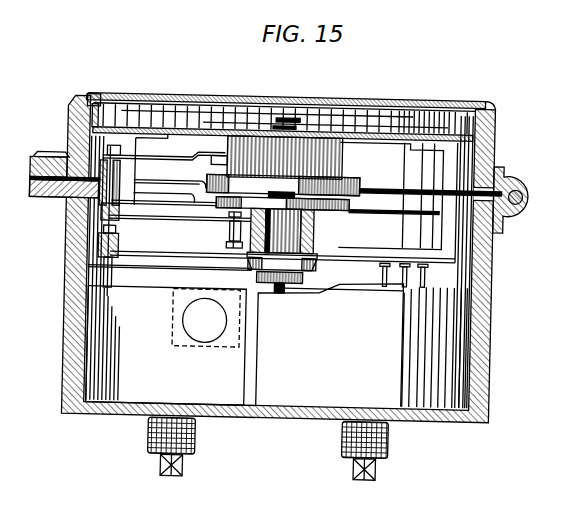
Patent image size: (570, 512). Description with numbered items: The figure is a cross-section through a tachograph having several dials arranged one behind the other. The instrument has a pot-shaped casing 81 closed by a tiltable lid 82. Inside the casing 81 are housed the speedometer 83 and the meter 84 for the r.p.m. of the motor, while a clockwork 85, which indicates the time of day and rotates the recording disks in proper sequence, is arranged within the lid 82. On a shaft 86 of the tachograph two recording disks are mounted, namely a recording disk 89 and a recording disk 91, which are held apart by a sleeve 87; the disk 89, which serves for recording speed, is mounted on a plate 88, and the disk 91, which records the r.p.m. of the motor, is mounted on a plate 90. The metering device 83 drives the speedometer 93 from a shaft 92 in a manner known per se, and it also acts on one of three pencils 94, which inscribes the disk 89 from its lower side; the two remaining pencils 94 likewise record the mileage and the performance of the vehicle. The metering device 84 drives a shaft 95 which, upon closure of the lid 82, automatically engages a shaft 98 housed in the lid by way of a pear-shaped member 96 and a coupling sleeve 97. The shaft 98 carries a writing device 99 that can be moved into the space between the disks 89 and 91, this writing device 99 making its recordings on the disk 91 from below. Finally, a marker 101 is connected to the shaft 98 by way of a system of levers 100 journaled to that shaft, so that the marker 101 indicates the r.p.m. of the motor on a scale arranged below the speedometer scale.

The casing 81 is at (487, 289).
The lid 82 is at (488, 155).
The speedometer 83 is at (450, 399).
The meter for the r.p.m. of the motor 84 is at (118, 394).
The clockwork 85 is at (318, 143).
The shaft 86 is at (287, 191).
The sleeve 87 is at (314, 229).
The plate 88 is at (251, 259).
The recording disk 89 is at (165, 254).
The plate 90 is at (352, 200).
The recording disk 91 is at (393, 213).
The shaft 92 is at (279, 293).
The speedometer 93 is at (408, 123).
The pencils 94 is at (421, 289).
The shaft 95 is at (106, 263).
The pear-shaped member 96 is at (100, 247).
The coupling sleeve 97 is at (104, 230).
The shaft 98 is at (103, 195).
The writing device 99 is at (230, 217).
The system of levers 100 is at (212, 160).
The marker 101 is at (162, 110).